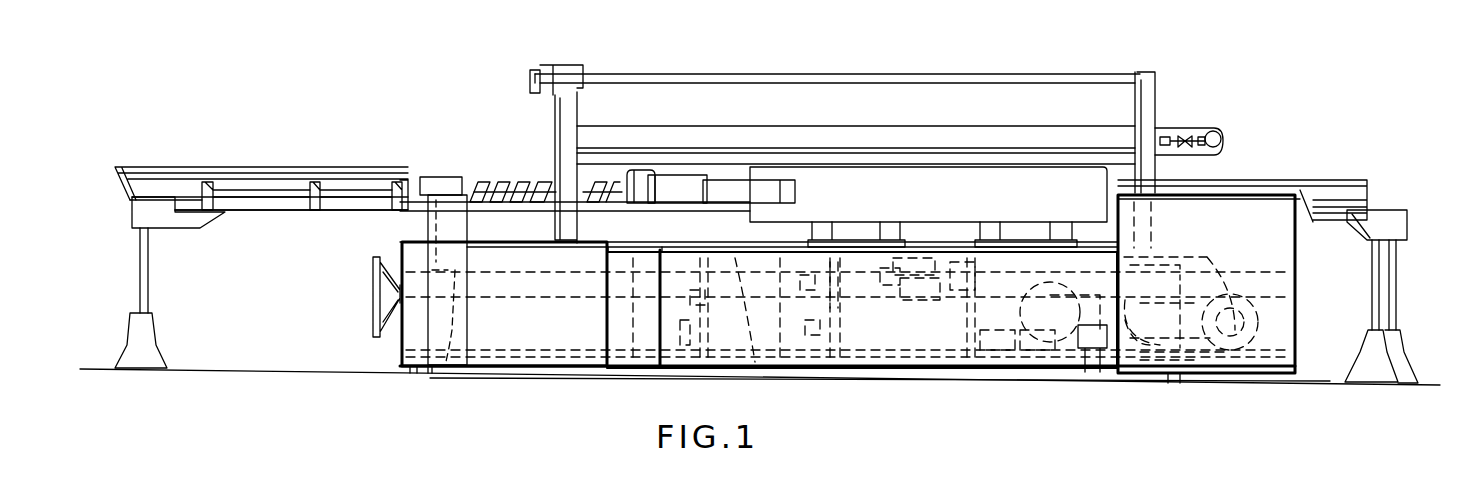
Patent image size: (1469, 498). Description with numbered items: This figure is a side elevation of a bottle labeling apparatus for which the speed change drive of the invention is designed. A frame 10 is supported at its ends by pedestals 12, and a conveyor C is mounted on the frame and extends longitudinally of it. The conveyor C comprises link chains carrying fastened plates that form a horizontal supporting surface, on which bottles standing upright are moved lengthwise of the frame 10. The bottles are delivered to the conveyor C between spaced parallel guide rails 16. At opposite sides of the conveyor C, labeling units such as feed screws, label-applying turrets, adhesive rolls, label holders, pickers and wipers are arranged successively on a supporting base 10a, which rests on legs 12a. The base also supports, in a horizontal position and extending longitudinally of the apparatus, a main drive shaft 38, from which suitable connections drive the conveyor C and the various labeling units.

The frame 10 is at (267, 148).
The supporting base 10a is at (514, 370).
The pedestals 12 is at (148, 273).
The legs 12a is at (416, 375).
The guide rails 16 is at (360, 177).
The conveyor C is at (278, 226).
The main drive shaft 38 is at (857, 312).